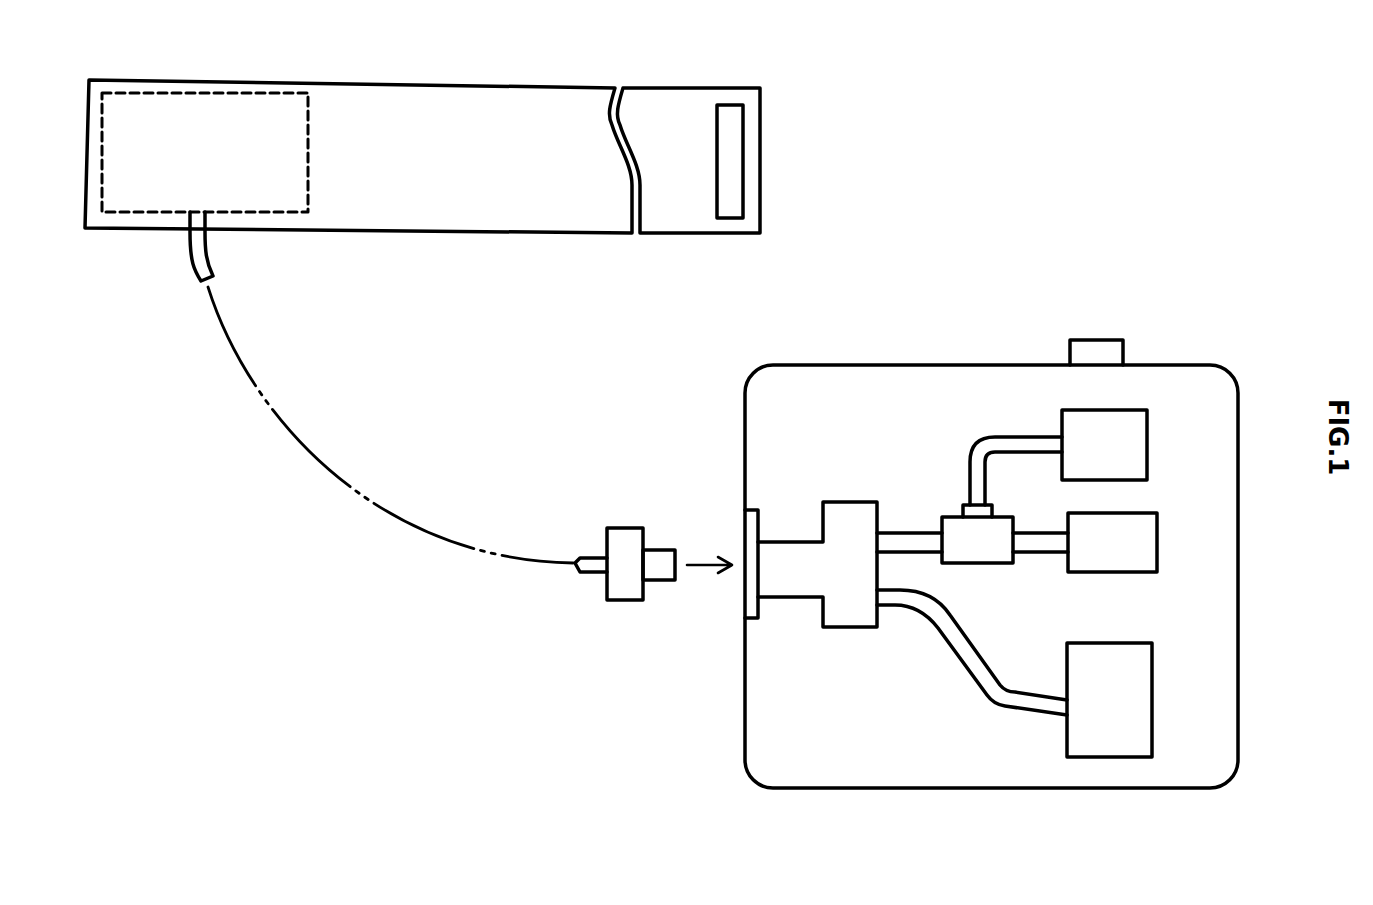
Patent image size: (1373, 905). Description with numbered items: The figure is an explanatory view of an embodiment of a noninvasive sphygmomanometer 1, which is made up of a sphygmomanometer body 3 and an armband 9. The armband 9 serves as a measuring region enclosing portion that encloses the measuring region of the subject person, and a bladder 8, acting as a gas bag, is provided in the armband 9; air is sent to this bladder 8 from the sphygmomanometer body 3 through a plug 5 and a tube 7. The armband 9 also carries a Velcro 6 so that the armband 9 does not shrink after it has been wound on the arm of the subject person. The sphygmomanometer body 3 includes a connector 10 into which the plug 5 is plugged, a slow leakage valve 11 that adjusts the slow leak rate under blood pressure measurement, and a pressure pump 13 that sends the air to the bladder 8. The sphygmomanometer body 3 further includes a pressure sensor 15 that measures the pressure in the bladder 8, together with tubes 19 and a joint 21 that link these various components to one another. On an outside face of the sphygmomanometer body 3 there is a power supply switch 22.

The noninvasive sphygmomanometer 1 is at (347, 728).
The sphygmomanometer body 3 is at (955, 822).
The plug 5 is at (620, 540).
The Velcro 6 is at (732, 120).
The tube 7 is at (210, 258).
The bladder 8 is at (178, 110).
The armband 9 is at (392, 258).
The connector 10 is at (850, 612).
The slow leakage valve 11 is at (1142, 545).
The pressure pump 13 is at (1133, 445).
The pressure sensor 15 is at (1135, 698).
The tubes 19 is at (1000, 445).
The joint 21 is at (988, 548).
The power supply switch 22 is at (1095, 350).